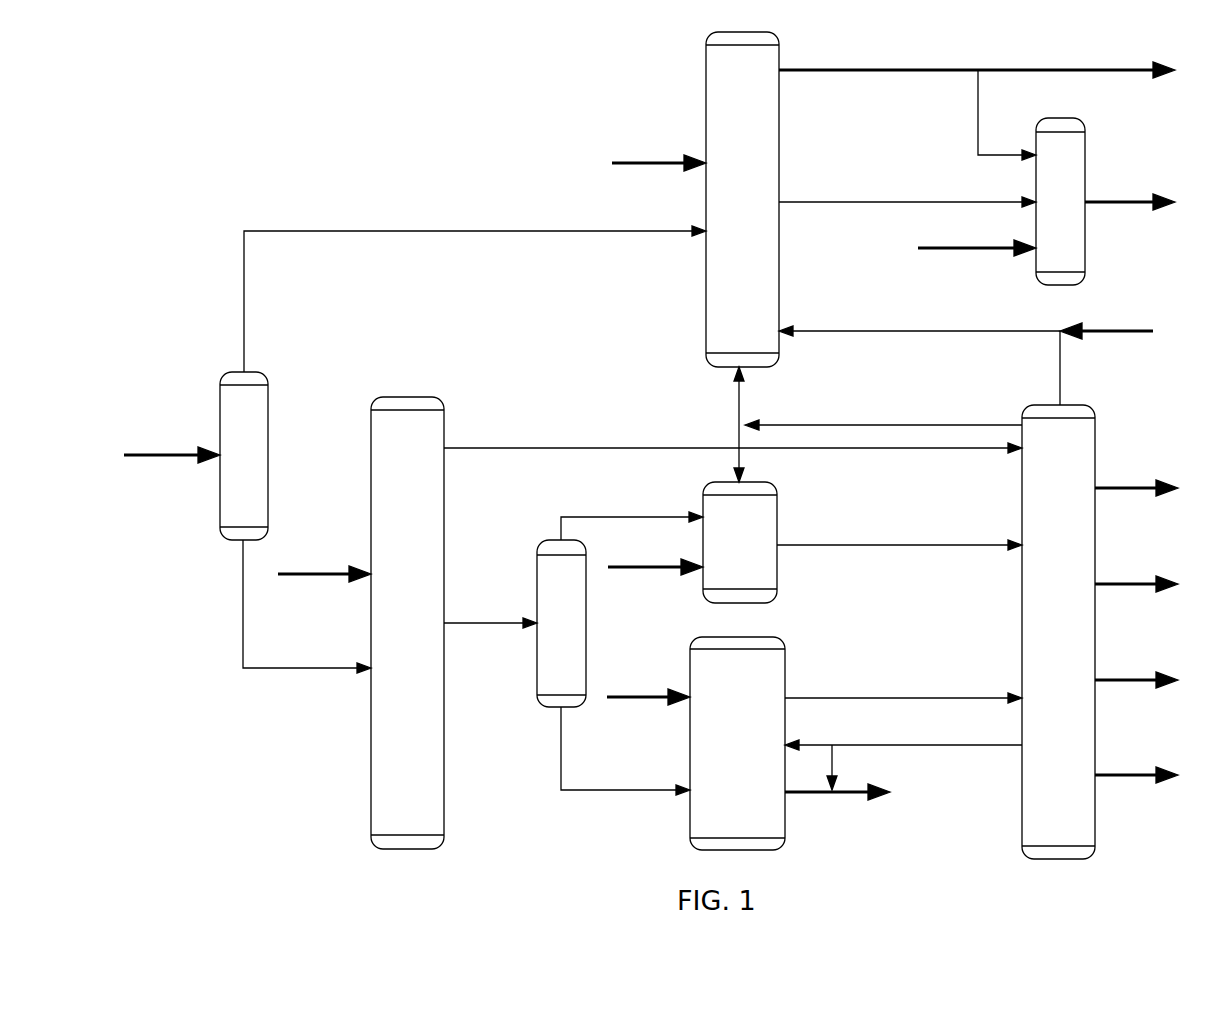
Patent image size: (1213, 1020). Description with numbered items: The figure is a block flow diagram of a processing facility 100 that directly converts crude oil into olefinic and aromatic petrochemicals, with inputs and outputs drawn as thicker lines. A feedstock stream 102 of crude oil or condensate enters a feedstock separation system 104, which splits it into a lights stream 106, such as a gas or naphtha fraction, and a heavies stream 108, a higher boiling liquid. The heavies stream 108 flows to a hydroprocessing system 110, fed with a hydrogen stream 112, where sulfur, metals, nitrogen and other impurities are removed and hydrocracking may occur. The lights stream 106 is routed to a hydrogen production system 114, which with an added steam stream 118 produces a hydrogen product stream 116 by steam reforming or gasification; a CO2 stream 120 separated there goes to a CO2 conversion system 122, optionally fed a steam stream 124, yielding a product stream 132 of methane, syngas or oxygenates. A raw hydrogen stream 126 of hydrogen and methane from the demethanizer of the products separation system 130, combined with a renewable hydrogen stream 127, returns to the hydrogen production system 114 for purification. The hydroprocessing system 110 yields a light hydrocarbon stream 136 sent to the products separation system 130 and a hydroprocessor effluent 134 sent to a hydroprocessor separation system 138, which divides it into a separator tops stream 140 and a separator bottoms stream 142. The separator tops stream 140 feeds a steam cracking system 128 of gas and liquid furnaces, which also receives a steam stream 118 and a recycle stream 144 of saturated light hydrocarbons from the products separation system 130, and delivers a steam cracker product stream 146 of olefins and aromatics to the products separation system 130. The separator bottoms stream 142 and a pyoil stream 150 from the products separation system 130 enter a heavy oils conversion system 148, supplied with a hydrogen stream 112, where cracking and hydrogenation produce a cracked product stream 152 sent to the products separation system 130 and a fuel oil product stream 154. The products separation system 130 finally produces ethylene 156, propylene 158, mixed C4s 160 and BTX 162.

The processing facility 100 is at (312, 95).
The feedstock stream 102 is at (173, 455).
The feedstock separation system 104 is at (268, 420).
The lights stream 106 is at (468, 231).
The heavies stream 108 is at (303, 668).
The hydroprocessing system 110 is at (371, 778).
The hydrogen stream 112 is at (325, 574).
The hydrogen production system 114 is at (779, 128).
The hydrogen product stream 116 is at (880, 70).
The steam stream 118 is at (652, 163).
The CO2 stream 120 is at (895, 202).
The CO2 conversion system 122 is at (1085, 168).
The steam stream 124 is at (965, 248).
The raw hydrogen stream 126 is at (1060, 365).
The renewable hydrogen stream 127 is at (1118, 331).
The steam cracking system 128 is at (777, 568).
The products separation system 130 is at (1095, 440).
The product stream 132 is at (1130, 202).
The hydroprocessor effluent 134 is at (490, 623).
The light hydrocarbon stream 136 is at (598, 448).
The hydroprocessor separation system 138 is at (537, 658).
The separator tops stream 140 is at (632, 517).
The separator bottoms stream 142 is at (618, 790).
The recycle stream 144 is at (888, 425).
The steam cracker product stream 146 is at (900, 545).
The heavy oils conversion system 148 is at (785, 672).
The pyoil stream 150 is at (950, 745).
The cracked product stream 152 is at (905, 698).
The fuel oil product stream 154 is at (845, 792).
The ethylene 156 is at (1130, 488).
The propylene 158 is at (1130, 584).
The mixed C4s 160 is at (1130, 680).
The BTX 162 is at (1130, 775).